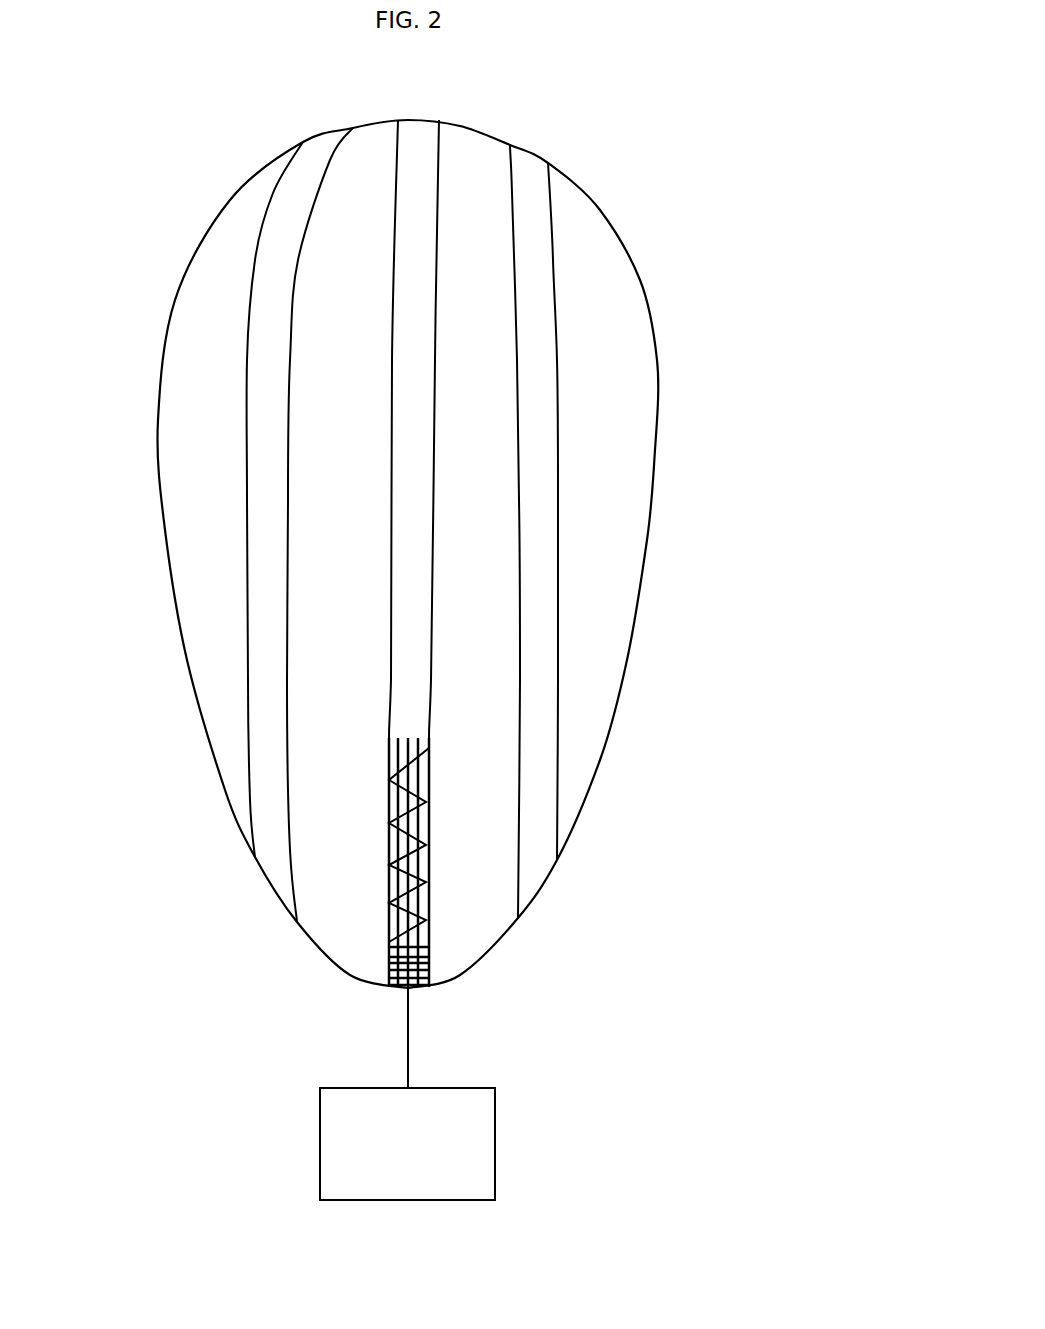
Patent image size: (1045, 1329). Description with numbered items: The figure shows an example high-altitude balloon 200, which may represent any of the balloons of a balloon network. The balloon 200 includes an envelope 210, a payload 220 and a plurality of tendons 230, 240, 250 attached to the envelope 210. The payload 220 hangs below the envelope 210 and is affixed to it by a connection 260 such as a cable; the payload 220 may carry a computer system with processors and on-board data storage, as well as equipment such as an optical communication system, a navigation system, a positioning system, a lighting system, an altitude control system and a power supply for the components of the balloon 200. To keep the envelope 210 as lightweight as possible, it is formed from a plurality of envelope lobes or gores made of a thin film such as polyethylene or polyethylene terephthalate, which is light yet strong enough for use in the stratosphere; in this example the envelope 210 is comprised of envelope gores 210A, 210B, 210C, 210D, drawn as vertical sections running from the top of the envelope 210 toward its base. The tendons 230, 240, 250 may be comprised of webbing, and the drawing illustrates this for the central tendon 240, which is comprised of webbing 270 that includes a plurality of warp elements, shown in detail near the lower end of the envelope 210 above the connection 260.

The high-altitude balloon 200 is at (789, 36).
The envelope 210 is at (647, 290).
The envelope gore 210A is at (210, 593).
The envelope gore 210B is at (320, 753).
The envelope gore 210C is at (458, 842).
The envelope gore 210D is at (607, 568).
The payload 220 is at (320, 1137).
The tendon 230 is at (313, 138).
The tendon 240 is at (415, 118).
The tendon 250 is at (528, 147).
The connection 260 is at (409, 1050).
The webbing 270 is at (388, 933).